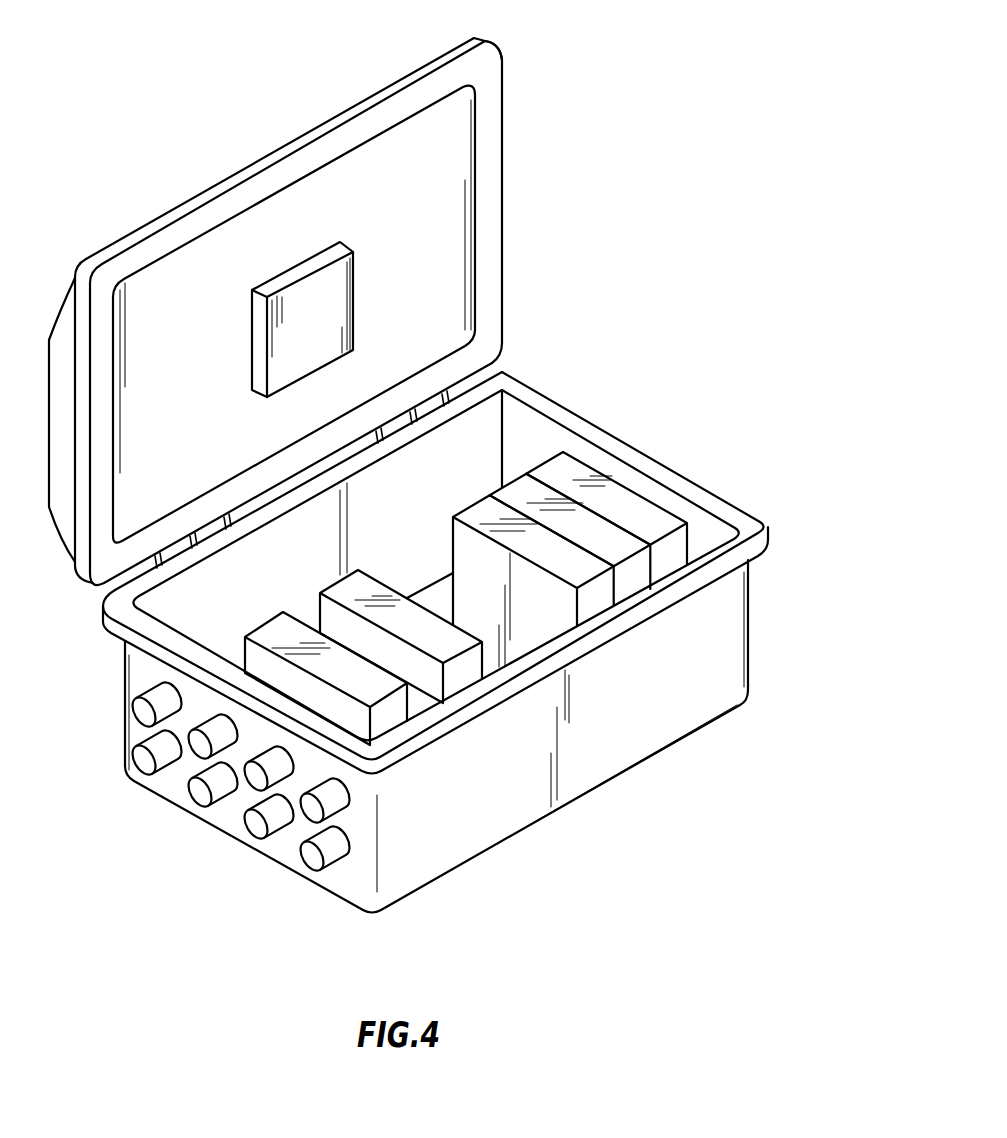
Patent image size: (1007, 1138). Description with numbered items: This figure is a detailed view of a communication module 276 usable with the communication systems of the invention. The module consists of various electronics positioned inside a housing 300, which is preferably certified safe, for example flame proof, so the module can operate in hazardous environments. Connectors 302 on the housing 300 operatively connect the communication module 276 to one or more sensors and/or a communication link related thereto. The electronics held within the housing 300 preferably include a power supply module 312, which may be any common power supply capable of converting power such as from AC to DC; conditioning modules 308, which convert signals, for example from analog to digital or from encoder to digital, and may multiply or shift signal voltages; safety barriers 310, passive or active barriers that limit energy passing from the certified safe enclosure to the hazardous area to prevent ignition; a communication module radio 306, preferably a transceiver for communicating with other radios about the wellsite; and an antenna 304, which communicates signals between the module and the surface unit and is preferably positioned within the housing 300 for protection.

The communication module 276 is at (454, 490).
The housing 300 is at (638, 703).
The connectors 302 is at (311, 853).
The antenna 304 is at (330, 292).
The communication module radio 306 is at (613, 543).
The conditioning module 308 is at (577, 568).
The safety barriers 310 is at (623, 503).
The power supply module 312 is at (442, 645).